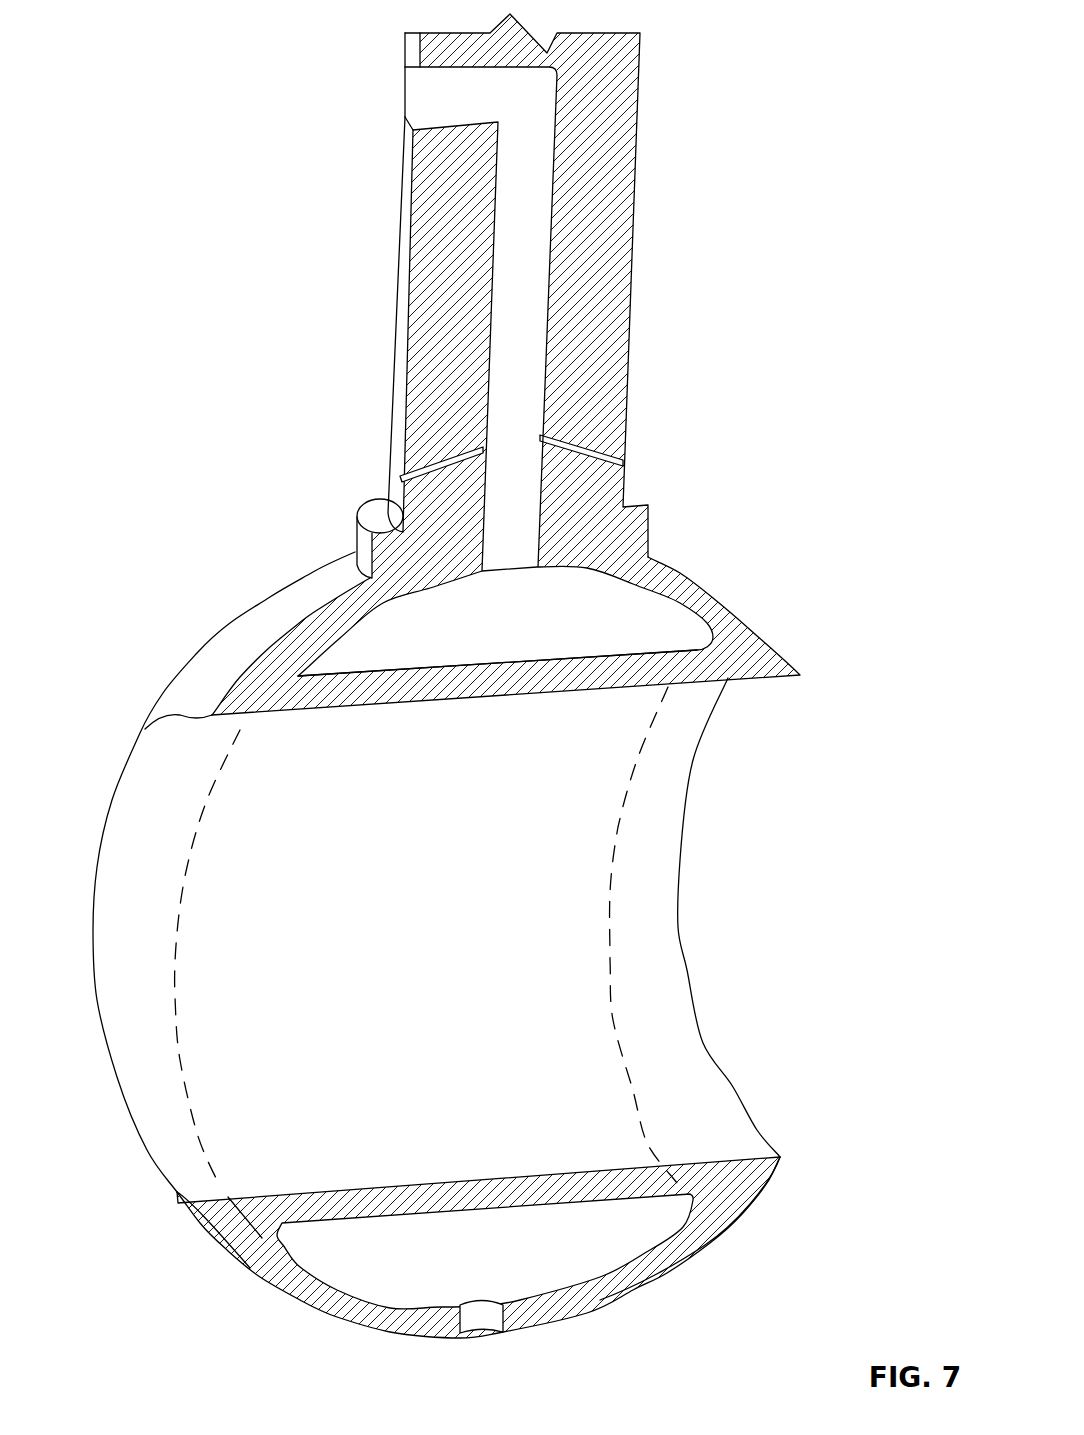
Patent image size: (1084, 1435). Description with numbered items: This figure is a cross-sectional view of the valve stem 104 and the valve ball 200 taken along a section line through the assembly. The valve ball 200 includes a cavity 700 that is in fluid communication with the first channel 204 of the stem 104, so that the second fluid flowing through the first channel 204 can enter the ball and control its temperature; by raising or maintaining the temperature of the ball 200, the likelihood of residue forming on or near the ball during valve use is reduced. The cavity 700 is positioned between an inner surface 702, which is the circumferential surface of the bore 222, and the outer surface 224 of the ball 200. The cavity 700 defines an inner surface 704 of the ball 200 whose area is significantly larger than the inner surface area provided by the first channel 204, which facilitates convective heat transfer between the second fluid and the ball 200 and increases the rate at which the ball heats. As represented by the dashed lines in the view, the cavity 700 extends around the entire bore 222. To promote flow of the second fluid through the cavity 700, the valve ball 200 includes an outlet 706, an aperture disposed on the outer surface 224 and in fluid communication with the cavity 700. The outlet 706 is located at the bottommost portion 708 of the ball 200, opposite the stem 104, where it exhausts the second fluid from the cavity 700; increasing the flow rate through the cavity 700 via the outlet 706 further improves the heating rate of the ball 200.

The valve stem 104 is at (632, 203).
The valve ball 200 is at (697, 990).
The first channel 204 is at (511, 261).
The bore 222 is at (127, 855).
The outer surface 224 is at (270, 607).
The cavity 700 is at (634, 606).
The inner surface of the bore 702 is at (435, 910).
The inner surface of the ball 704 is at (405, 671).
The outlet 706 is at (484, 1341).
The bottommost portion 708 is at (430, 1337).